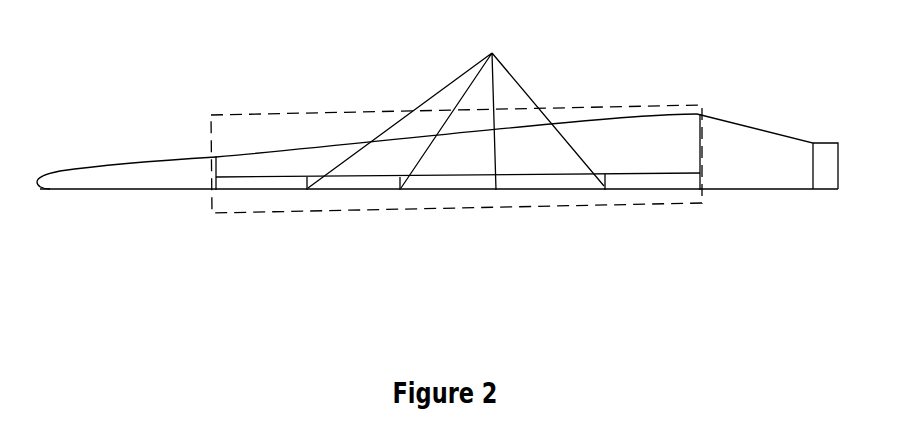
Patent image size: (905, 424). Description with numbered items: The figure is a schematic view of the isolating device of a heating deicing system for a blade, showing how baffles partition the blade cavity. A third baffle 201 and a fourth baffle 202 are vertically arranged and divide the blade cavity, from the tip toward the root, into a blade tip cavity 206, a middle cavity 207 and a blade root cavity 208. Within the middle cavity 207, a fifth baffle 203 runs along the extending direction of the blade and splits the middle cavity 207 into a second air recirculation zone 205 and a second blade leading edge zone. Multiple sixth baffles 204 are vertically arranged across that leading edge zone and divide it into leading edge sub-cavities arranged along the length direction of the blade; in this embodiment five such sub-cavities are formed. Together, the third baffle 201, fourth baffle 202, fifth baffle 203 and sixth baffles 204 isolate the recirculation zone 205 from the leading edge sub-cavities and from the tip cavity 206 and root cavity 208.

The third baffle 201 is at (216, 158).
The fourth baffle 202 is at (699, 160).
The fifth baffle 203 is at (284, 177).
The sixth baffles 204 is at (492, 53).
The second air recirculation zone 205 is at (600, 148).
The blade tip cavity 206 is at (162, 178).
The middle cavity 207 is at (532, 207).
The blade root cavity 208 is at (750, 165).